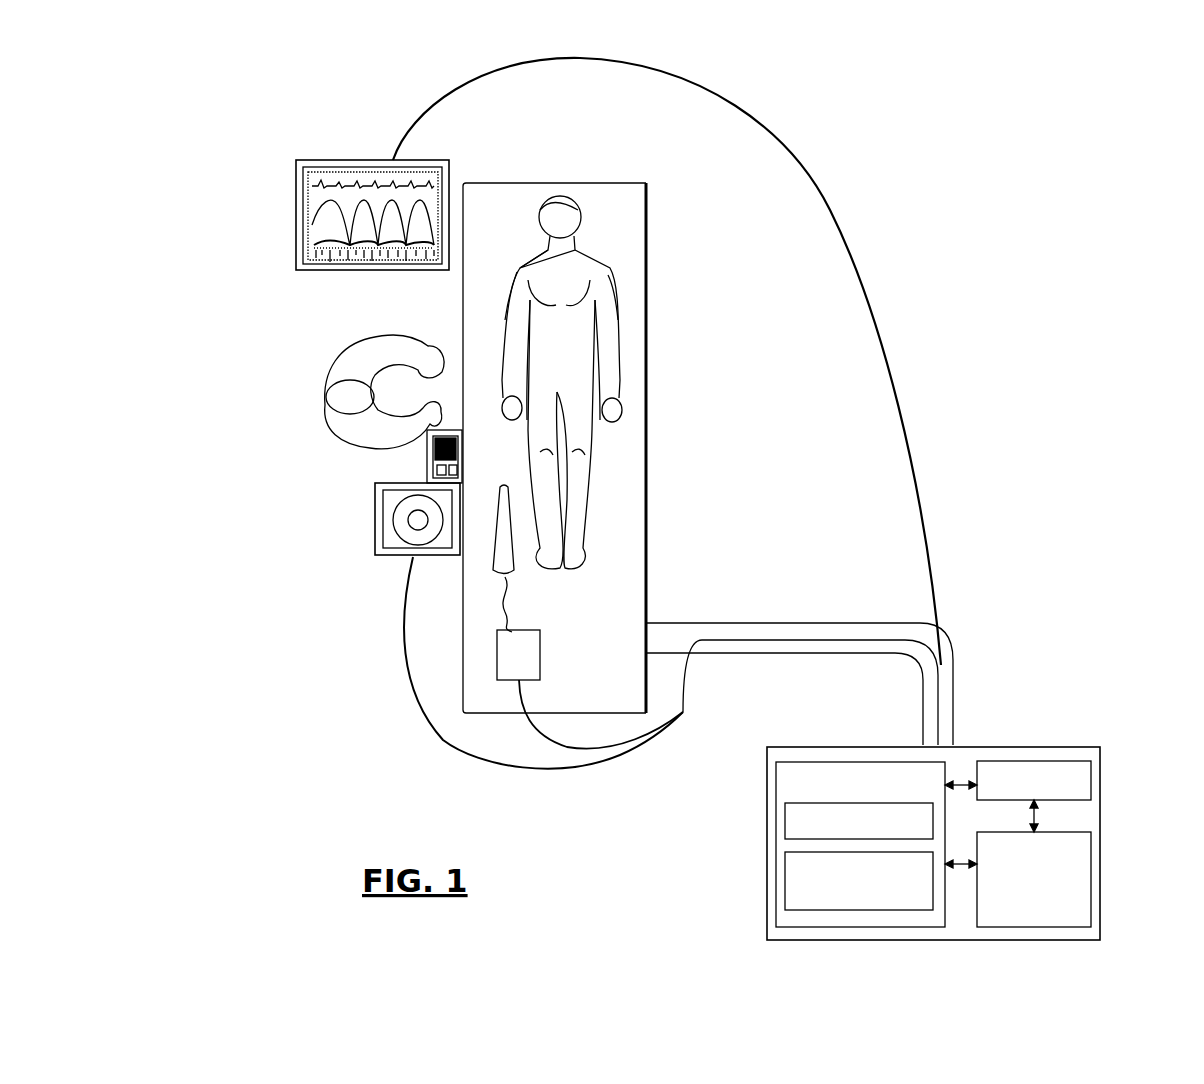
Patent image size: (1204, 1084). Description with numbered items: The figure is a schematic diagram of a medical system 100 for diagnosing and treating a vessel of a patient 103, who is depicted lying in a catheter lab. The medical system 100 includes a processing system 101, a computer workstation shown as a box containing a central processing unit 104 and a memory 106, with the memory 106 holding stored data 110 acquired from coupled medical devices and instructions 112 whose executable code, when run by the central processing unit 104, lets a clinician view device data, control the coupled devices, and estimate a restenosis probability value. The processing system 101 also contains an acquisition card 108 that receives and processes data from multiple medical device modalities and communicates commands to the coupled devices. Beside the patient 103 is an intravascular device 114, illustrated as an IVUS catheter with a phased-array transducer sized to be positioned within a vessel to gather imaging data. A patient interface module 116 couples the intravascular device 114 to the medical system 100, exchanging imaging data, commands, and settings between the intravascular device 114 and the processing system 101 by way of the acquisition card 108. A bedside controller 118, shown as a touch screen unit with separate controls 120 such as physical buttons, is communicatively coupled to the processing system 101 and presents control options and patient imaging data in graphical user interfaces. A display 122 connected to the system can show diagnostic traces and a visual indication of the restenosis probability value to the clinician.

The medical system 100 is at (815, 124).
The processing system 101 is at (1102, 775).
The patient 103 is at (545, 234).
The central processing unit 104 is at (1034, 780).
The memory 106 is at (860, 844).
The acquisition card 108 is at (1034, 879).
The data 110 is at (859, 821).
The instructions 112 is at (859, 881).
The intravascular device 114 is at (500, 483).
The patient interface module 116 is at (497, 658).
The bedside controller 118 is at (378, 518).
The controls 120 is at (427, 460).
The display 122 is at (296, 180).